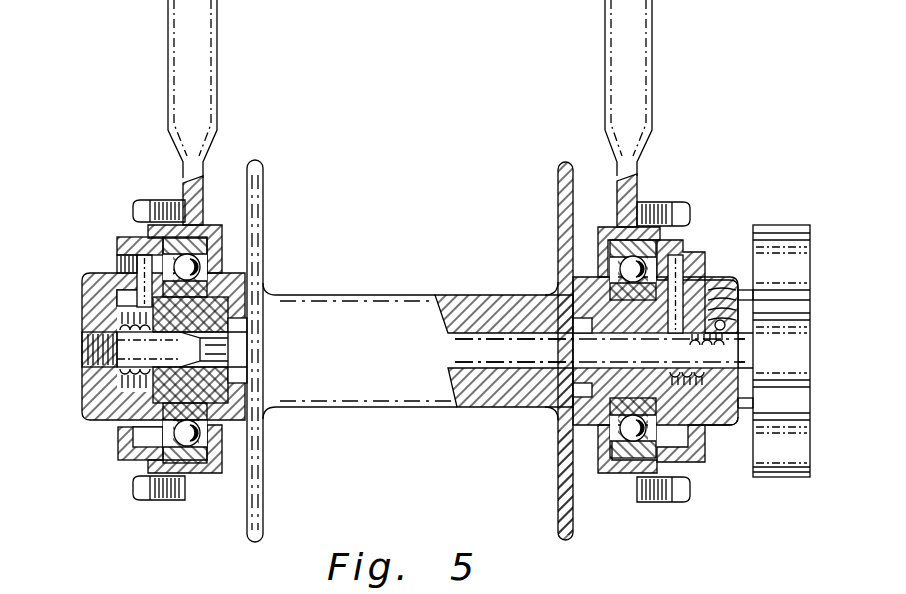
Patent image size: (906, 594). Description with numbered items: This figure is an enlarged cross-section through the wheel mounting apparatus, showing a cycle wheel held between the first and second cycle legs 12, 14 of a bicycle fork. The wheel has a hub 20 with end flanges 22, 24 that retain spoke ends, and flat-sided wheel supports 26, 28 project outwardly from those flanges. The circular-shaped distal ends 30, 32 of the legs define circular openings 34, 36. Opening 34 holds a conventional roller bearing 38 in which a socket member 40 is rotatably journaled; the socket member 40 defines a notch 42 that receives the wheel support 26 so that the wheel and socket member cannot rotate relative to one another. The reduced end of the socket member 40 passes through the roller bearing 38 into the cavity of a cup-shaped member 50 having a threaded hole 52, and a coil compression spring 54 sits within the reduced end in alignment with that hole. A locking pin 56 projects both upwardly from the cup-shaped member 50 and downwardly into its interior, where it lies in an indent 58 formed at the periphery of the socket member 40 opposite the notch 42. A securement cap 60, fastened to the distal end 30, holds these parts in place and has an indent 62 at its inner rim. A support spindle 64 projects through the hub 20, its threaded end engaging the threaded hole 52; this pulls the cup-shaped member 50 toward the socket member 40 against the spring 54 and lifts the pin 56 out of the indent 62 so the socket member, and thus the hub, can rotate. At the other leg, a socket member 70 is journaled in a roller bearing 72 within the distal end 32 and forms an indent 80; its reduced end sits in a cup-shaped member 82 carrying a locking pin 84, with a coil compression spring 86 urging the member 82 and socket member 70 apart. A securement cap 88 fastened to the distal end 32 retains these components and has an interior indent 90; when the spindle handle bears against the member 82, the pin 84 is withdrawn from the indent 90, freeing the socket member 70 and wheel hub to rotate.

The first cycle leg 12 is at (178, 68).
The second cycle leg 14 is at (630, 42).
The hub 20 is at (332, 305).
The end flange 22 is at (262, 168).
The end flange 24 is at (557, 182).
The wheel support 26 is at (248, 366).
The wheel support 28 is at (583, 378).
The distal end 30 is at (215, 472).
The distal end 32 is at (620, 473).
The circular opening 34 is at (226, 262).
The circular opening 36 is at (598, 262).
The roller bearing 38 is at (148, 232).
The socket member 40 is at (224, 277).
The notch 42 is at (248, 338).
The cup-shaped member 50 is at (86, 420).
The threaded hole 52 is at (82, 346).
The coil compression spring 54 is at (125, 380).
The locking pin 56 is at (140, 270).
The indent 58 is at (128, 300).
The securement cap 60 is at (130, 460).
The indent 62 is at (120, 248).
The support spindle 64 is at (497, 342).
The socket member 70 is at (590, 300).
The roller bearing 72 is at (602, 478).
The indent 80 is at (740, 262).
The cup-shaped member 82 is at (735, 435).
The locking pin 84 is at (681, 260).
The coil compression spring 86 is at (688, 333).
The securement cap 88 is at (703, 455).
The indent 90 is at (703, 265).